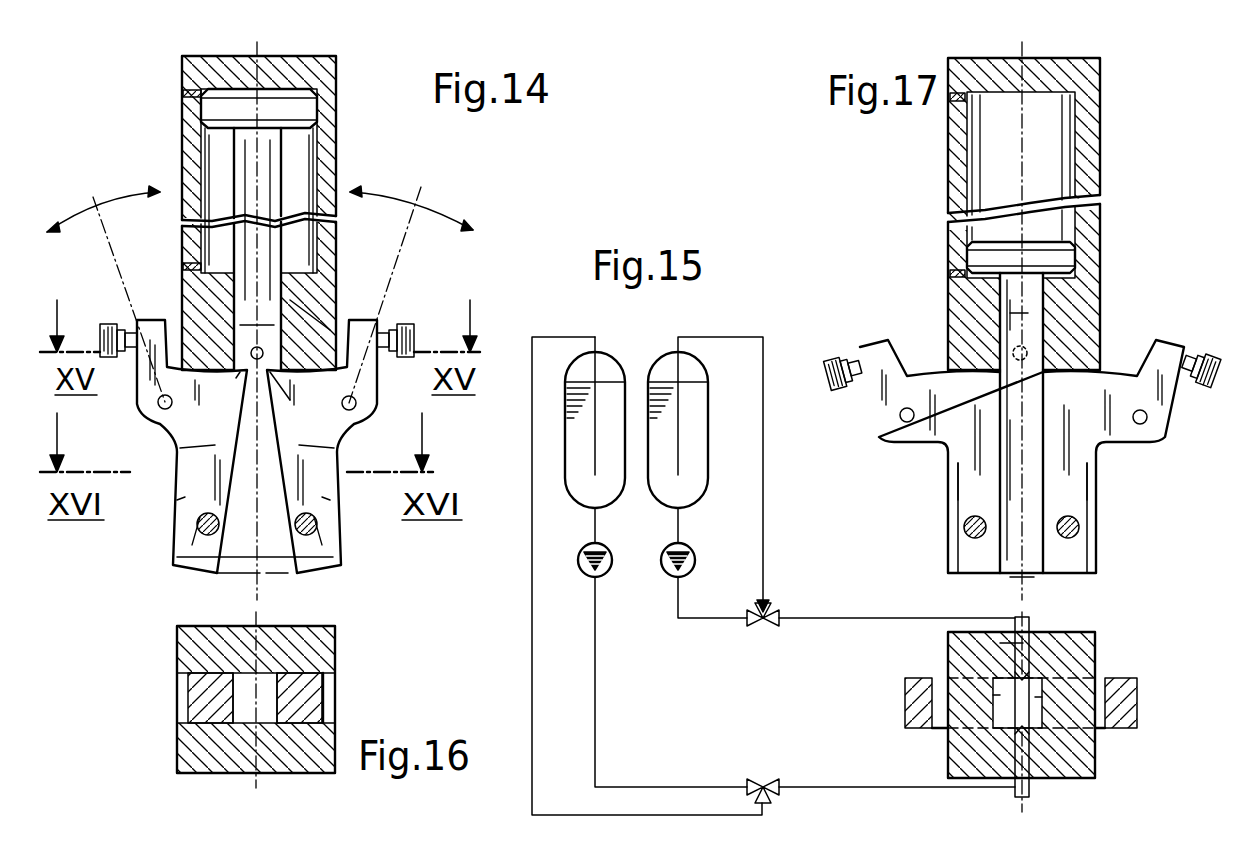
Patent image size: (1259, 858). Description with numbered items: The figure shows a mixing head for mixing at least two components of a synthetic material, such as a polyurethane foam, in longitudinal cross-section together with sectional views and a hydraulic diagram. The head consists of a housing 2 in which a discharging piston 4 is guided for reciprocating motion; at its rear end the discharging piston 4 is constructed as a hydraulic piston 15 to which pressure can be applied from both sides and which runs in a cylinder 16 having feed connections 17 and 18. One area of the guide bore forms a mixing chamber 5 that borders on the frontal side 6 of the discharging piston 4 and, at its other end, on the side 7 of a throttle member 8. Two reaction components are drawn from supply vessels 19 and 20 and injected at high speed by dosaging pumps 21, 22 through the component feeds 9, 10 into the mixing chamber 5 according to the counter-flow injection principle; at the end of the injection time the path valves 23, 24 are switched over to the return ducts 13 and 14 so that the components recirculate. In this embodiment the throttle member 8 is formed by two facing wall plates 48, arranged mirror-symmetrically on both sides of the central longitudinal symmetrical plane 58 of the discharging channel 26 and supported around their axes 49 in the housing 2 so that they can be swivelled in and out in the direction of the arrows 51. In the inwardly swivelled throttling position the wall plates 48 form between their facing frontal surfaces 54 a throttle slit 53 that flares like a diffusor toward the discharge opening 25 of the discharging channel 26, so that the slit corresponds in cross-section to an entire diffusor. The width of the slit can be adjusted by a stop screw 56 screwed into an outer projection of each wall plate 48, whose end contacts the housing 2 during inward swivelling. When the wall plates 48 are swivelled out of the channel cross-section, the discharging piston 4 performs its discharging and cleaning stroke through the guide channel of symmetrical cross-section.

In FIG. 14, the housing 2 is at (259, 213).
In FIG. 17, the housing 2 is at (1067, 308).
In FIG. 14, the discharging piston 4 is at (247, 148).
In FIG. 17, the discharging piston 4 is at (1028, 413).
In FIG. 14, the mixing chamber 5 is at (300, 325).
In FIG. 14, the frontal side 6 is at (247, 325).
In FIG. 17, the frontal side 6 is at (1020, 577).
In FIG. 14, the side 7 is at (263, 398).
In FIG. 17, the side 7 is at (993, 695).
In FIG. 14, the throttle member 8 is at (372, 390).
In FIG. 17, the throttle member 8 is at (1010, 313).
In FIG. 17, the component feed 9 is at (1017, 765).
In FIG. 17, the component feed 10 is at (1023, 643).
In FIG. 15, the return duct 13 is at (530, 637).
In FIG. 15, the return duct 14 is at (763, 488).
In FIG. 14, the hydraulic piston 15 is at (227, 108).
In FIG. 17, the hydraulic piston 15 is at (983, 258).
In FIG. 14, the cylinder 16 is at (295, 155).
In FIG. 17, the cylinder 16 is at (1053, 163).
In FIG. 14, the feed connection 17 is at (183, 93).
In FIG. 14, the feed connection 18 is at (183, 268).
In FIG. 15, the supply vessel 19 is at (612, 348).
In FIG. 15, the supply vessel 20 is at (665, 350).
In FIG. 15, the dosaging pump 21 is at (605, 568).
In FIG. 15, the dosaging pump 22 is at (693, 563).
In FIG. 15, the path valve 23 is at (762, 778).
In FIG. 15, the path valve 24 is at (762, 635).
In FIG. 14, the discharge opening 25 is at (260, 573).
In FIG. 14, the discharging channel 26 is at (273, 568).
In FIG. 14, the wall plate 48 is at (207, 490).
In FIG. 16, the wall plate 48 is at (210, 685).
In FIG. 17, the wall plate 48 is at (973, 480).
In FIG. 14, the axis 49 is at (197, 530).
In FIG. 17, the axis 49 is at (965, 527).
In FIG. 14, the arrow 51 is at (118, 200).
In FIG. 14, the throttle slit 53 is at (158, 402).
In FIG. 16, the throttle slit 53 is at (267, 707).
In FIG. 17, the throttle slit 53 is at (1017, 710).
In FIG. 14, the frontal surface 54 is at (192, 447).
In FIG. 14, the stop screw 56 is at (102, 323).
In FIG. 17, the stop screw 56 is at (830, 358).
In FIG. 14, the central longitudinal symmetrical plane 58 is at (197, 558).
In FIG. 16, the central longitudinal symmetrical plane 58 is at (255, 757).